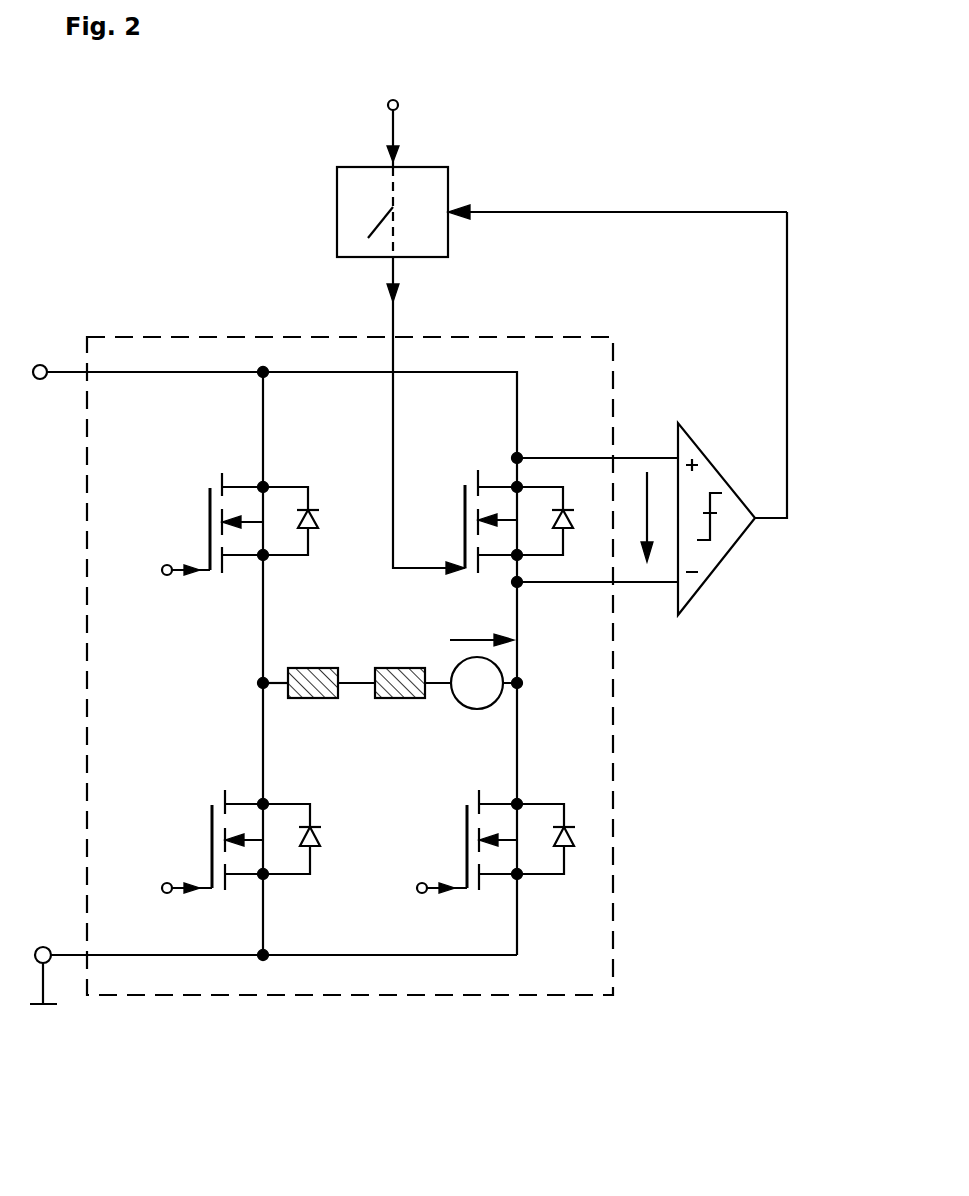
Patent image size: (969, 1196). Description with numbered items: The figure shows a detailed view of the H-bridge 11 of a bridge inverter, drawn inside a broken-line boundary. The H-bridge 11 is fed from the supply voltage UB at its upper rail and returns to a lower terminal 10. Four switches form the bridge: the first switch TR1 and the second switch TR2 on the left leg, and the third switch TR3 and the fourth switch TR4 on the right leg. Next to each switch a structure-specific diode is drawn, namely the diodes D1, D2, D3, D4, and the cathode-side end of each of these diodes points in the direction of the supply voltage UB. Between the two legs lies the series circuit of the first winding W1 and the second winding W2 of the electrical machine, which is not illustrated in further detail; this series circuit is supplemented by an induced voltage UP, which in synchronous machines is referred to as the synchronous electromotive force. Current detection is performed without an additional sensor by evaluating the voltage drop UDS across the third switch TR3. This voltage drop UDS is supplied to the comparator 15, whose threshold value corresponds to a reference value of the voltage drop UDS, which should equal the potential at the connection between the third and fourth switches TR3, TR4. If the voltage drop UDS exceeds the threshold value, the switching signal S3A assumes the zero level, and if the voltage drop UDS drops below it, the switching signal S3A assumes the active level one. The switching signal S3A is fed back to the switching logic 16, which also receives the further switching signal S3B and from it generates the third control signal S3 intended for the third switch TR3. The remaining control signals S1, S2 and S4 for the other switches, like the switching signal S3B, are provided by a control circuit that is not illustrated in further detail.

The ground terminal 10 is at (42, 1010).
The H-bridge 11 is at (201, 350).
The comparator 15 is at (707, 472).
The switching logic 16 is at (345, 209).
The switching signal S3B is at (393, 99).
The switching signal S3A is at (468, 210).
The third control signal S3 is at (400, 295).
The supply voltage UB is at (40, 380).
The first switch TR1 is at (208, 481).
The second switch TR2 is at (210, 800).
The third switch TR3 is at (463, 480).
The fourth switch TR4 is at (463, 800).
The control signal S1 is at (186, 566).
The control signal S2 is at (190, 884).
The control signal 4 S4 is at (445, 884).
The structure-specific diode D1 is at (312, 531).
The structure-specific diode D2 is at (316, 848).
The structure-specific diode D3 is at (567, 530).
The structure-specific diode D4 is at (567, 848).
The first winding W1 is at (316, 668).
The second winding W2 is at (398, 668).
The induced voltage UP is at (470, 638).
The voltage drop UDS is at (647, 490).